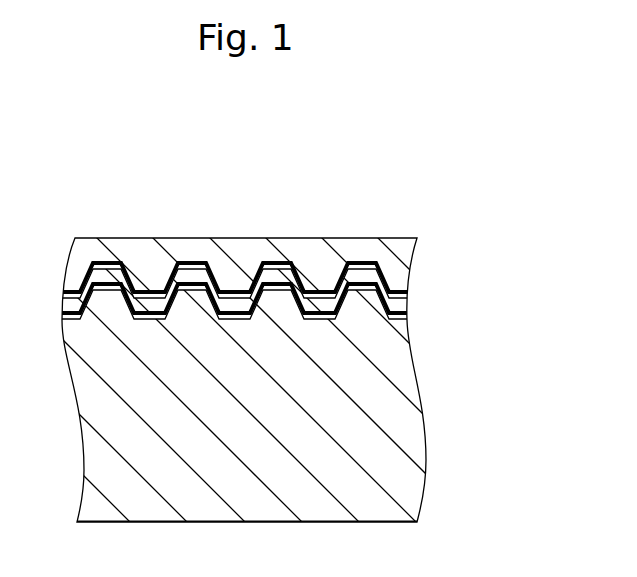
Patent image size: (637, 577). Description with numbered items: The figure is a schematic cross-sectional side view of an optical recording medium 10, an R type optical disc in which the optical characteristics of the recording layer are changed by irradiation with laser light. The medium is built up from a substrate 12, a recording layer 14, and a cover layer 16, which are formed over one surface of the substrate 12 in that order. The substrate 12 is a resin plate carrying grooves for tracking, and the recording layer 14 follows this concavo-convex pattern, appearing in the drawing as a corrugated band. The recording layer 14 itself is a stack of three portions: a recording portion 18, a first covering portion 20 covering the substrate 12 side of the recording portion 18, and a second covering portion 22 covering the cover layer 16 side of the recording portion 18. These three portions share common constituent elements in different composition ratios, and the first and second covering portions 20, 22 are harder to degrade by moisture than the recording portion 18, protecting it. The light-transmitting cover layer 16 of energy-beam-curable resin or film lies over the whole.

The optical recording medium 10 is at (254, 203).
The substrate 12 is at (423, 407).
The recording layer 14 is at (318, 380).
The cover layer 16 is at (417, 247).
The recording portion 18 is at (407, 305).
The first covering portion 20 is at (250, 314).
The second covering portion 22 is at (407, 291).